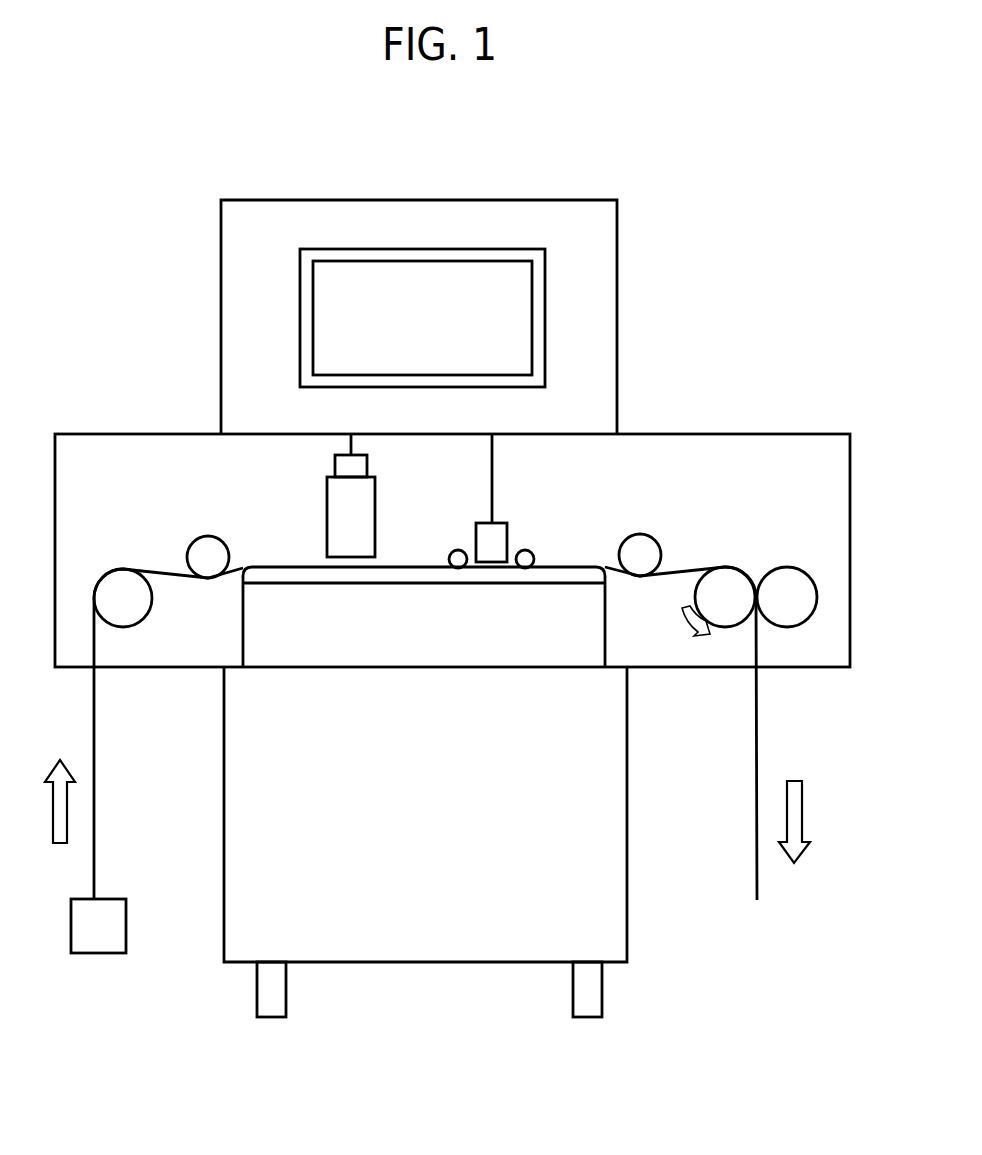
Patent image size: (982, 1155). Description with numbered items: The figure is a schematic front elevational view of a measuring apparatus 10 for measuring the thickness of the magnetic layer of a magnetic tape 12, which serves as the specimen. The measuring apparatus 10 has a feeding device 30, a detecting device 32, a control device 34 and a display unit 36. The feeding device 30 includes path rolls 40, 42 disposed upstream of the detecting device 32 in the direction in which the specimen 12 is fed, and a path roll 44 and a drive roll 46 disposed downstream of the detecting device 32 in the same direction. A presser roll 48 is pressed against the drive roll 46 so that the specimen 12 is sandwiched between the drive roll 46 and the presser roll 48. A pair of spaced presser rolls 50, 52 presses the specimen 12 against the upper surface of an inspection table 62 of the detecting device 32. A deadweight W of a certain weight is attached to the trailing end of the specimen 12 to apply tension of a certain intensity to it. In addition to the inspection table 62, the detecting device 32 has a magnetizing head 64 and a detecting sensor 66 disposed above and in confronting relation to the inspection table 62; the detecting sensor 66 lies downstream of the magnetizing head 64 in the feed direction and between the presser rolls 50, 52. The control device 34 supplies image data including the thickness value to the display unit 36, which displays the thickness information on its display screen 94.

The measuring apparatus 10 is at (660, 152).
The magnetic tape 12 is at (760, 710).
The feeding device 30 is at (806, 559).
The detecting device 32 is at (552, 483).
The control device 34 is at (618, 263).
The display unit 36 is at (442, 247).
The path roll 40 is at (123, 583).
The path roll 42 is at (212, 547).
The path roll 44 is at (641, 546).
The drive roll 46 is at (731, 577).
The presser roll 48 is at (784, 578).
The presser roll 50 is at (458, 569).
The presser roll 52 is at (525, 569).
The inspection table 62 is at (399, 650).
The magnetizing head 64 is at (363, 510).
The detecting sensor 66 is at (498, 527).
The display screen 94 is at (376, 295).
The deadweight W is at (97, 940).